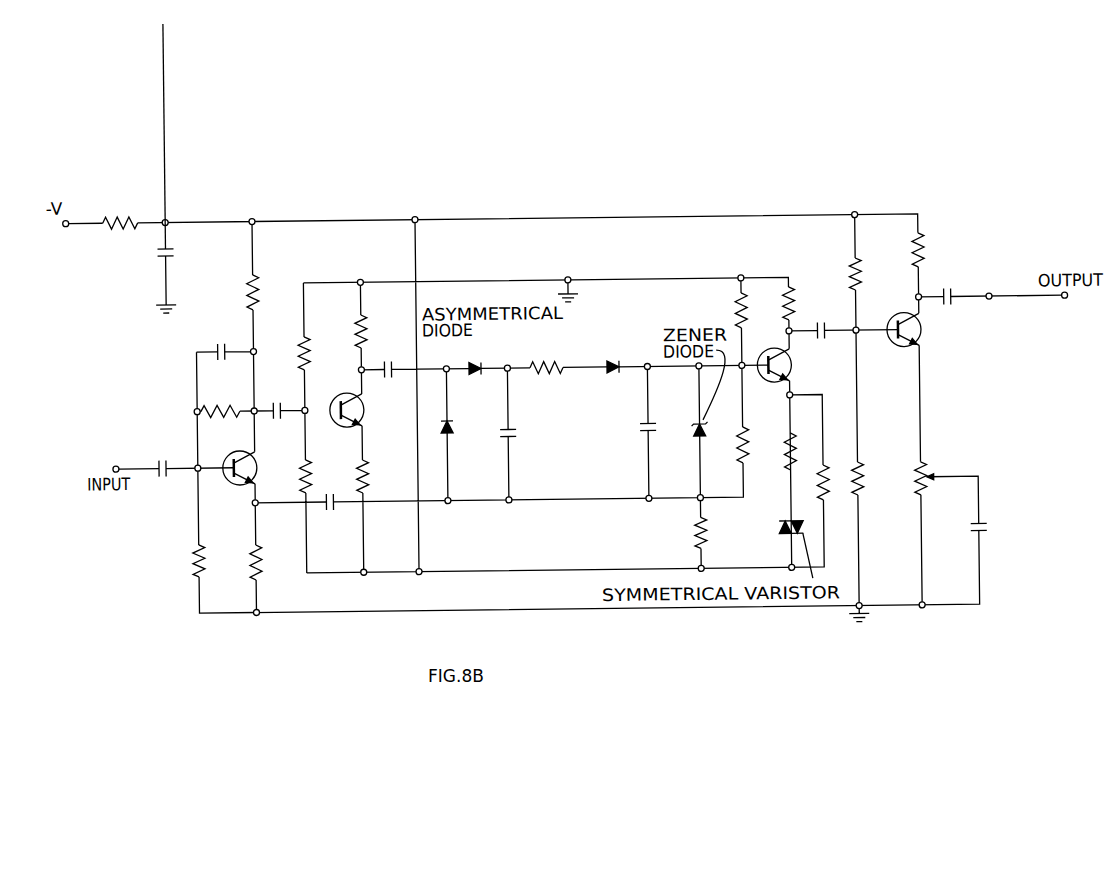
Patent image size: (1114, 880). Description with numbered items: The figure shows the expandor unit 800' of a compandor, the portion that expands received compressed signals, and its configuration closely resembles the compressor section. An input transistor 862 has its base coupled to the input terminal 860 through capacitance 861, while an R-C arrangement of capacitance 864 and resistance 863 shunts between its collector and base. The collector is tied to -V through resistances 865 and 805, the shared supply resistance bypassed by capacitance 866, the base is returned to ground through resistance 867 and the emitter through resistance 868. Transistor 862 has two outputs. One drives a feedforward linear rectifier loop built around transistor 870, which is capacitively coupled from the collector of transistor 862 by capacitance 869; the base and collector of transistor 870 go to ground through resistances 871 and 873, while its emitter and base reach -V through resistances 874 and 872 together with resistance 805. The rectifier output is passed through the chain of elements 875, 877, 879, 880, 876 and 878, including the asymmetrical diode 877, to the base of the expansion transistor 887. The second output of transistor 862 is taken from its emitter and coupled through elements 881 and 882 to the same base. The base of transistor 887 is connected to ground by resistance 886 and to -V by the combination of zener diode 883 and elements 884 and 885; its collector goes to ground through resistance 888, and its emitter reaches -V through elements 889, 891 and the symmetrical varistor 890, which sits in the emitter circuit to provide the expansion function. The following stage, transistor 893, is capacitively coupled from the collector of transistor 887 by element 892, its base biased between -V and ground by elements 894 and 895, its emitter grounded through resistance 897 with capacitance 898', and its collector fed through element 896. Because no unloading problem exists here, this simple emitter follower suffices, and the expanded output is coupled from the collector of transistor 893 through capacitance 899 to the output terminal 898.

The resistance 805 is at (132, 213).
The amplifier circuit 800' is at (196, 136).
The capacitor 866 is at (174, 248).
The resistance 865 is at (259, 296).
The capacitance 864 is at (232, 345).
The resistance 863 is at (244, 402).
The capacitance 869 is at (287, 402).
The capacitance 861 is at (170, 456).
The input terminal 860 is at (119, 463).
The input transistor 862 is at (243, 449).
The resistance 867 is at (196, 551).
The resistance 868 is at (260, 562).
The capacitive coupling element 881 is at (337, 505).
The resistance 871 is at (320, 344).
The resistance 872 is at (310, 452).
The resistance 873 is at (366, 346).
The resistance 874 is at (368, 453).
The transistor 870 is at (339, 399).
The coupling element 875 is at (398, 371).
The asymmetrical diode 877 is at (476, 359).
The coupling element 879 is at (546, 360).
The coupling element 880 is at (616, 361).
The coupling element 876 is at (452, 424).
The coupling element 878 is at (515, 432).
The coupling element 882 is at (645, 428).
The zener diode 883 is at (694, 426).
The resistance 886 is at (741, 312).
The bias element 884 is at (742, 449).
The resistance 888 is at (792, 303).
The expansion transistor 887 is at (796, 375).
The coupling capacitance 892 is at (827, 330).
The emitter circuit element 889 is at (774, 437).
The bias element 885 is at (696, 546).
The varistor 890 is at (778, 540).
The emitter circuit element 891 is at (825, 488).
The bias element 894 is at (862, 274).
The bias element 895 is at (862, 474).
The collector load element 896 is at (927, 262).
The resistance 897 is at (924, 472).
The emitter follower output transistor 893 is at (896, 318).
The capacitance 899 is at (956, 294).
The output terminal 898 is at (1024, 285).
The capacitance 898' is at (1000, 515).